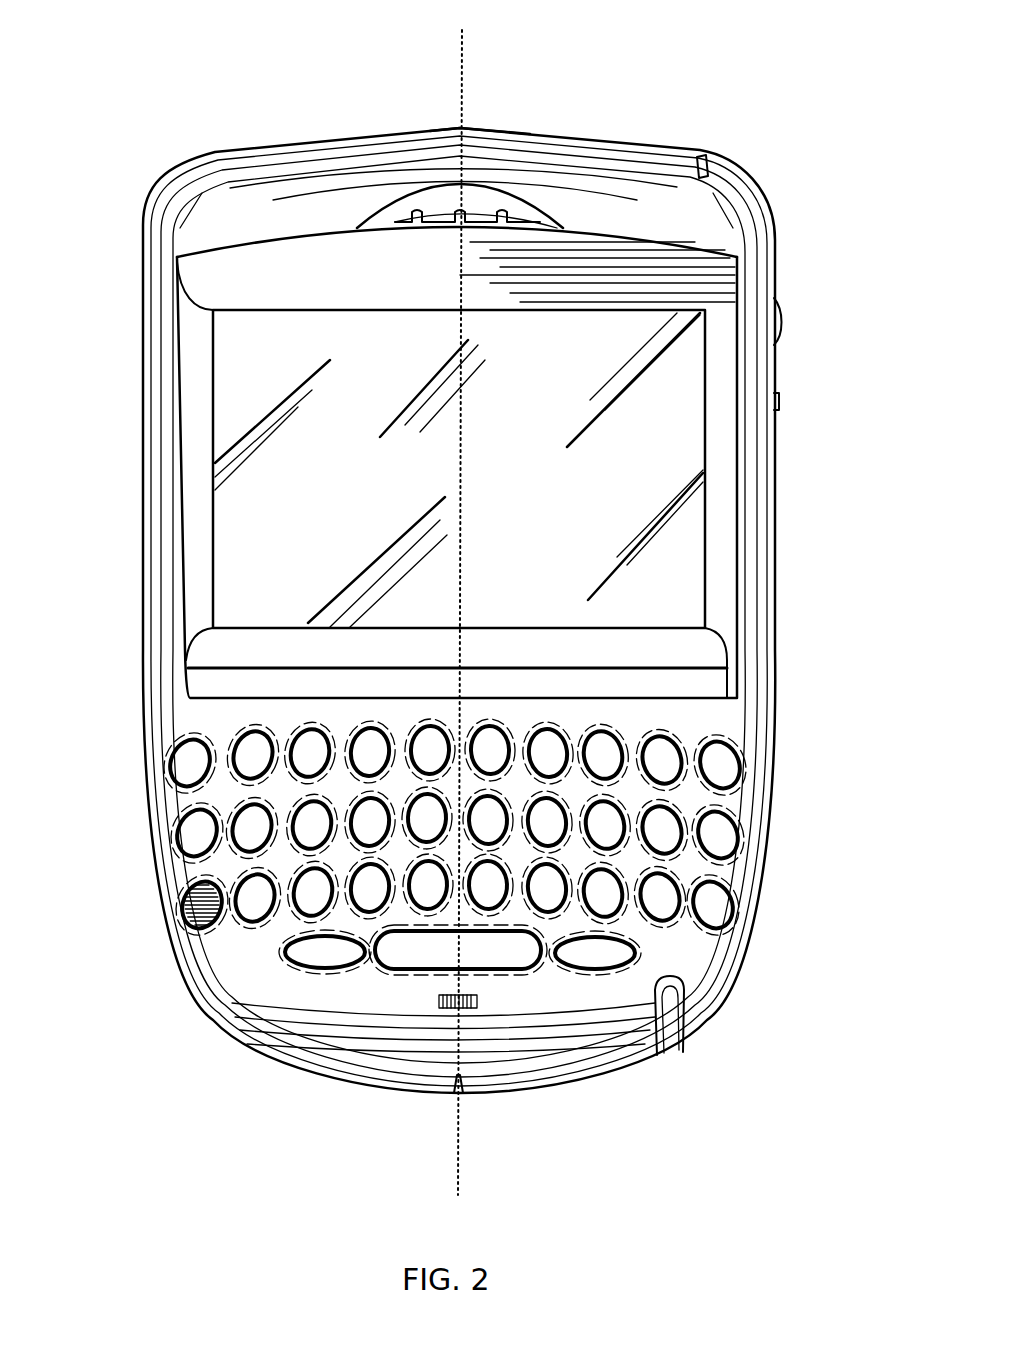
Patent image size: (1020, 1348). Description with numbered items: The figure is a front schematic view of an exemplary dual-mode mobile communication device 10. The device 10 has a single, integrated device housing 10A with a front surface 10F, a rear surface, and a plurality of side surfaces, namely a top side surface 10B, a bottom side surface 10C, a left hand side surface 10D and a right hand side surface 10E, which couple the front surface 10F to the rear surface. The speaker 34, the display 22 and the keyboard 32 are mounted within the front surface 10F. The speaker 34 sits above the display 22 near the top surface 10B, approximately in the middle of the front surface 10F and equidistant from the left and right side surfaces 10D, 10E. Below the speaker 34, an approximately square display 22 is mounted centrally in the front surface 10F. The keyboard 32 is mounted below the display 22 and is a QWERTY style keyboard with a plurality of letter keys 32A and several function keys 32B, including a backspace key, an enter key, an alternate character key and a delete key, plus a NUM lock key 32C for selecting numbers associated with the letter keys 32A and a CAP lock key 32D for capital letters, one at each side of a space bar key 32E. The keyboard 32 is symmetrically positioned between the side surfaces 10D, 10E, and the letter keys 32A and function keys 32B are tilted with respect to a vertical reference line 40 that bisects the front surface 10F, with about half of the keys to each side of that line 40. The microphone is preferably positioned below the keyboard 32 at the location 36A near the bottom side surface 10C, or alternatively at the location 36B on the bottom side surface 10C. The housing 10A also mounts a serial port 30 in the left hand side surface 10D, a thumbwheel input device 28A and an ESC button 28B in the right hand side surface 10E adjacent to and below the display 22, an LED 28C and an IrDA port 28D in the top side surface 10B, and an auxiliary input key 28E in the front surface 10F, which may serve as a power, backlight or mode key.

The dual-mode mobile communication device 10 is at (80, 31).
The device housing 10A is at (222, 212).
The top side surface 10B is at (432, 130).
The bottom side surface 10C is at (360, 1083).
The left hand side surface 10D is at (152, 573).
The right hand side surface 10E is at (767, 583).
The front surface 10F is at (230, 967).
The display 22 is at (243, 360).
The thumbwheel input device 28A is at (785, 330).
The ESC button 28B is at (776, 400).
The LED 28C is at (700, 160).
The IrDA port 28D is at (483, 128).
The auxiliary input key 28E is at (690, 996).
The serial port 30 is at (141, 343).
The keyboard 32 is at (391, 819).
The letter keys 32A is at (225, 735).
The function keys 32B is at (188, 883).
The NUM lock key 32C is at (307, 975).
The CAP lock key 32D is at (600, 978).
The space bar key 32E is at (418, 970).
The speaker 34 is at (478, 222).
The microphone location 36A is at (468, 1010).
The alternative microphone location 36B is at (462, 1096).
The vertical reference line 40 is at (464, 72).